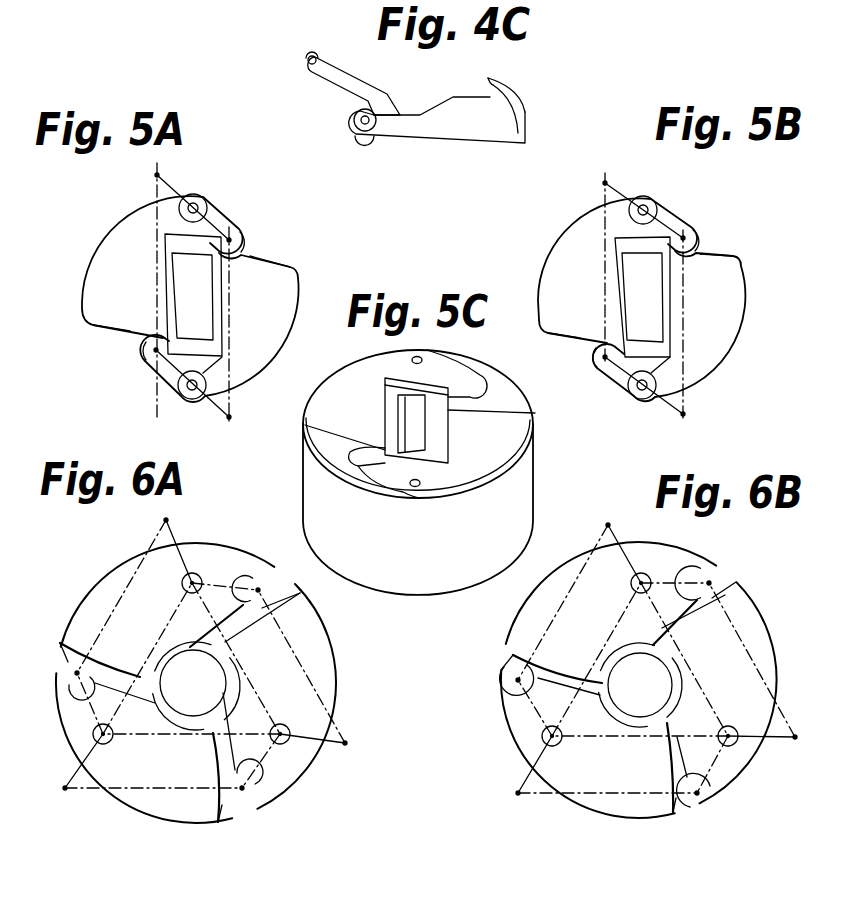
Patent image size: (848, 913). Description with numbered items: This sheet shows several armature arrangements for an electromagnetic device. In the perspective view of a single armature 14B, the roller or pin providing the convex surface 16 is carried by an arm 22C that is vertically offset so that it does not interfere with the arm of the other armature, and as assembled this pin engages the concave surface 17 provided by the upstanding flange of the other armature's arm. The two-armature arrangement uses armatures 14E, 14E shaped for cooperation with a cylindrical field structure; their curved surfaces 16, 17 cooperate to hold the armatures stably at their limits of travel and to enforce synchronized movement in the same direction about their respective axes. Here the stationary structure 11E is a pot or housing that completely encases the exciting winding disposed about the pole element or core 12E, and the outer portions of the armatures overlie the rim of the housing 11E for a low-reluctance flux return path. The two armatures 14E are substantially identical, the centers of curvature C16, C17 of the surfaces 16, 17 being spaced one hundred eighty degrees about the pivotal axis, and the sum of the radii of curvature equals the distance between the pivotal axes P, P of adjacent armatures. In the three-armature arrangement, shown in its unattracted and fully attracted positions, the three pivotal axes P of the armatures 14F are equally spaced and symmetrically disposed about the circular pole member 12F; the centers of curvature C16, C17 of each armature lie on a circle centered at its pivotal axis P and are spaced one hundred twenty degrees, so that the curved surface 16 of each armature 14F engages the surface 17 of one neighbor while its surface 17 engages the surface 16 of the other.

In FIG. 4C, the convex surface 16 is at (312, 78).
In FIG. 5A, the convex surface 16 is at (245, 247).
In FIG. 5B, the convex surface 16 is at (697, 245).
In FIG. 6A, the convex surface 16 is at (268, 597).
In FIG. 6B, the convex surface 16 is at (605, 686).
In FIG. 4C, the arm 22C is at (337, 73).
In FIG. 4C, the concave surface 17 is at (500, 98).
In FIG. 5A, the concave surface 17 is at (270, 257).
In FIG. 5B, the concave surface 17 is at (723, 255).
In FIG. 6A, the concave surface 17 is at (301, 585).
In FIG. 6B, the concave surface 17 is at (618, 697).
In FIG. 4C, the armature 14B is at (470, 123).
In FIG. 5A, the armature 14E is at (115, 235).
In FIG. 5B, the armature 14E is at (583, 225).
In FIG. 5C, the armature 14E is at (333, 433).
In FIG. 5A, the pole element 12E is at (193, 295).
In FIG. 5B, the pole element 12E is at (653, 305).
In FIG. 5C, the pole element 12E is at (407, 405).
In FIG. 5A, the pivotal axis P is at (197, 207).
In FIG. 5B, the pivotal axis P is at (642, 297).
In FIG. 5C, the pivotal axis P is at (410, 358).
In FIG. 6A, the pivotal axis P is at (192, 580).
In FIG. 6B, the pivotal axis P is at (642, 580).
In FIG. 5A, the center of curvature of concave surface C17 is at (159, 175).
In FIG. 5B, the center of curvature of concave surface C17 is at (607, 182).
In FIG. 6A, the center of curvature of concave surface C17 is at (164, 520).
In FIG. 6B, the center of curvature of concave surface C17 is at (606, 526).
In FIG. 5A, the center of curvature of convex surface C16 is at (232, 238).
In FIG. 5B, the center of curvature of convex surface C16 is at (603, 360).
In FIG. 6A, the center of curvature of convex surface C16 is at (259, 588).
In FIG. 6B, the center of curvature of convex surface C16 is at (711, 581).
In FIG. 5C, the stationary structure 11E is at (513, 508).
In FIG. 6A, the armature 14F is at (108, 587).
In FIG. 6B, the armature 14F is at (553, 588).
In FIG. 6A, the circular pole member 12F is at (193, 683).
In FIG. 6B, the circular pole member 12F is at (640, 685).